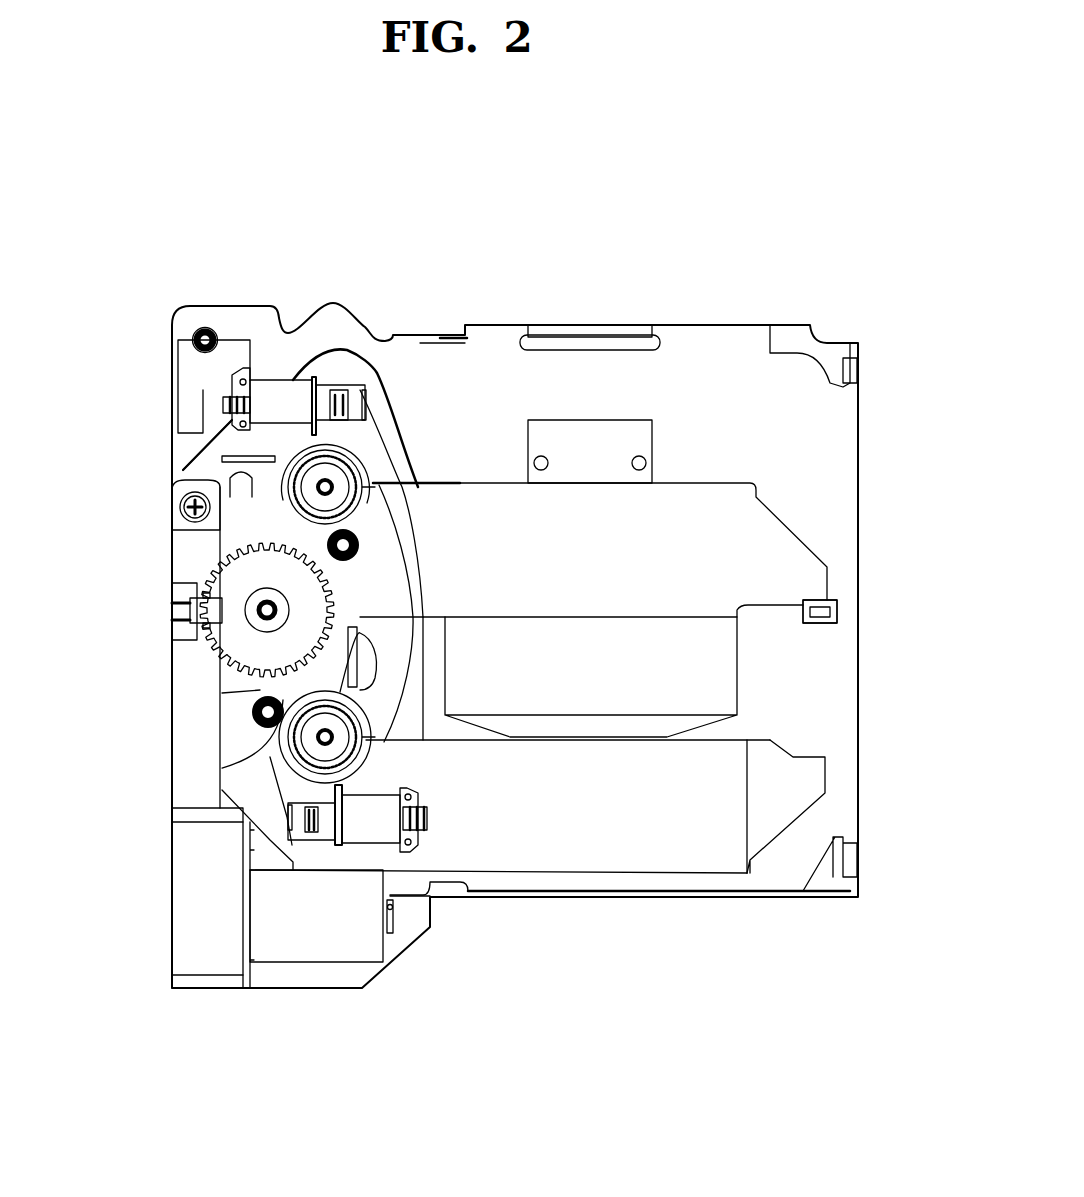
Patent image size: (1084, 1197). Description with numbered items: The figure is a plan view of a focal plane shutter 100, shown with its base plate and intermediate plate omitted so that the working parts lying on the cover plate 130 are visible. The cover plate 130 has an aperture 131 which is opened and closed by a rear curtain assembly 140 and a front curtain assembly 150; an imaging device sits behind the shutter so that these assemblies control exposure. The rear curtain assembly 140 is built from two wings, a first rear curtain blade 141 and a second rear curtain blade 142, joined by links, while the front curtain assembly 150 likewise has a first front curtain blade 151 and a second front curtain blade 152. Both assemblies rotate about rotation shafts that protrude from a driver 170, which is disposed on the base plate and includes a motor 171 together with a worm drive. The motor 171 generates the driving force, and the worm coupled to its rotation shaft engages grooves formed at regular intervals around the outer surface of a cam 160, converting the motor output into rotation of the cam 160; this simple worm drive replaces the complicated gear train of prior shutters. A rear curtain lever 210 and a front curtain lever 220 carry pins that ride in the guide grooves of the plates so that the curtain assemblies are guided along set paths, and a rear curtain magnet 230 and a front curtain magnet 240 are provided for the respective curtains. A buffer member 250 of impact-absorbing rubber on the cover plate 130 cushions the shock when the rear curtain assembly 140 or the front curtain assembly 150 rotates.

The focal plane shutter 100 is at (847, 271).
The cover plate 130 is at (770, 323).
The aperture 131 is at (703, 662).
The rear curtain assembly 140 is at (775, 997).
The first rear curtain blade 141 is at (643, 850).
The second rear curtain blade 142 is at (768, 823).
The front curtain assembly 150 is at (500, 232).
The first front curtain blade 151 is at (373, 580).
The second front curtain blade 152 is at (497, 527).
The cam 160 is at (243, 583).
The driver 170 is at (192, 672).
The motor 171 is at (307, 930).
The rear curtain lever 210 is at (252, 737).
The front curtain lever 220 is at (283, 512).
The rear curtain magnet 230 is at (370, 830).
The front curtain magnet 240 is at (285, 397).
The buffer member 250 is at (830, 613).